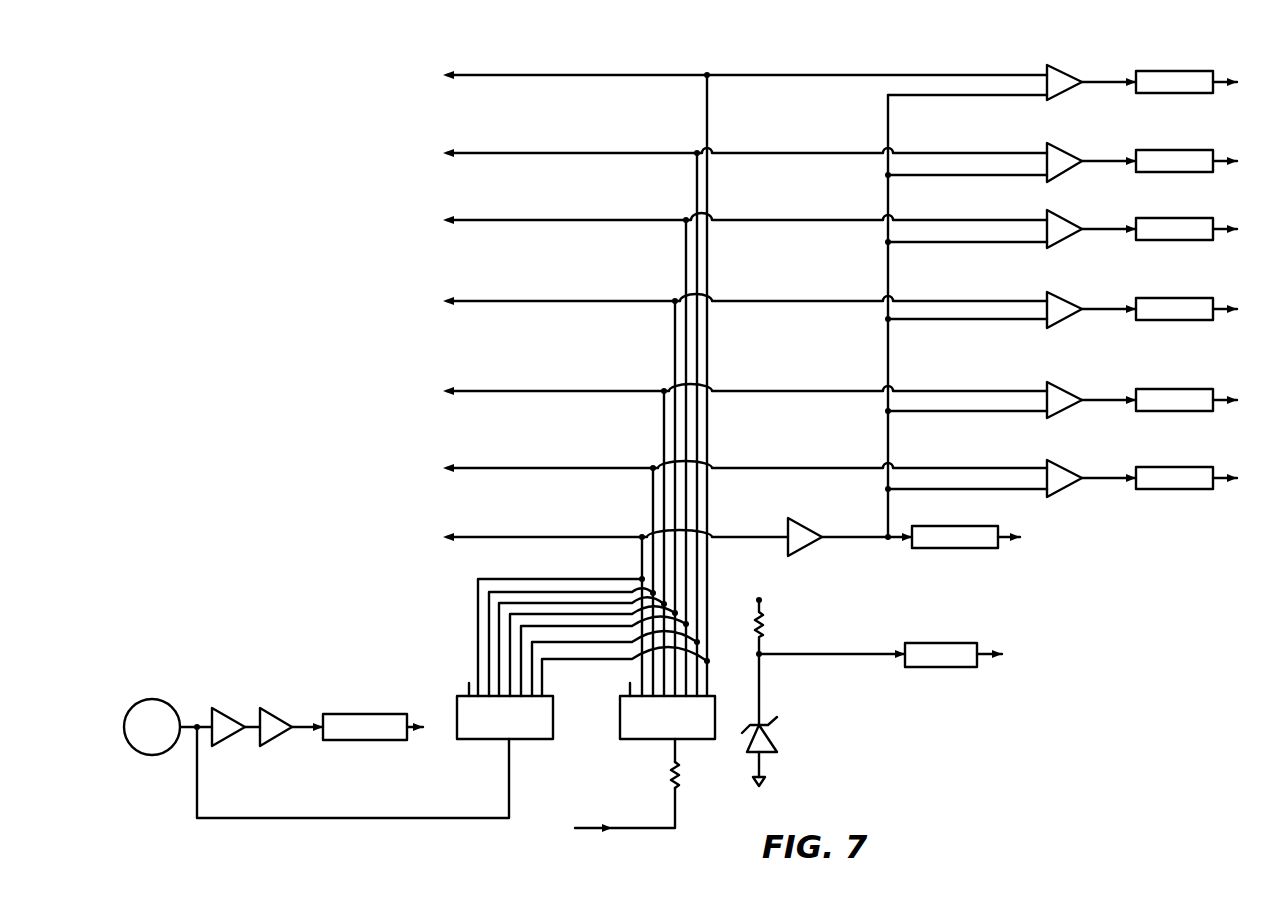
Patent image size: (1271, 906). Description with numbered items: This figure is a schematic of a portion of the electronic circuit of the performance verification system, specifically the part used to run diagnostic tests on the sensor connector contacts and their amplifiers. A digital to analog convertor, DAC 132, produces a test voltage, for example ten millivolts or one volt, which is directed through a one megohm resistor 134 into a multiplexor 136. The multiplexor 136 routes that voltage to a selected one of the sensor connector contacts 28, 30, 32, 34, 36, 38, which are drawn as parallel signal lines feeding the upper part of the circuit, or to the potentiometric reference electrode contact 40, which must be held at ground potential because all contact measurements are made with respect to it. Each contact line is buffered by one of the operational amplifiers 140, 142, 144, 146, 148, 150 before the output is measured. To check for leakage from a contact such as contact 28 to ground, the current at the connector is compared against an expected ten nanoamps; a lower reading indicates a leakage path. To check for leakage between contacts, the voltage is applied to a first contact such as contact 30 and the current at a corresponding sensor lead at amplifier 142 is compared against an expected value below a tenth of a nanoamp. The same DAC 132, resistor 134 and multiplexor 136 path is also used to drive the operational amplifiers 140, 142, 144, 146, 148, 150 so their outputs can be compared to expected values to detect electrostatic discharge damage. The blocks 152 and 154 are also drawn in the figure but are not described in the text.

The sensor connector contact 28 is at (445, 74).
The sensor connector contact 30 is at (445, 152).
The sensor connector contact 32 is at (445, 219).
The sensor connector contact 34 is at (445, 300).
The sensor connector contact 36 is at (445, 390).
The sensor connector contact 38 is at (445, 467).
The potentiometric reference electrode contact 40 is at (445, 536).
The DAC 132 is at (628, 829).
The resistor 134 is at (682, 777).
The multiplexor 136 is at (716, 703).
The operational amplifier 140 is at (1112, 72).
The operational amplifier 142 is at (1117, 150).
The operational amplifier 144 is at (1118, 217).
The operational amplifier 146 is at (1117, 295).
The operational amplifier 148 is at (1117, 385).
The operational amplifier 150 is at (1125, 463).
The latch block 152 is at (457, 697).
The amplifier buffers 154 is at (232, 709).